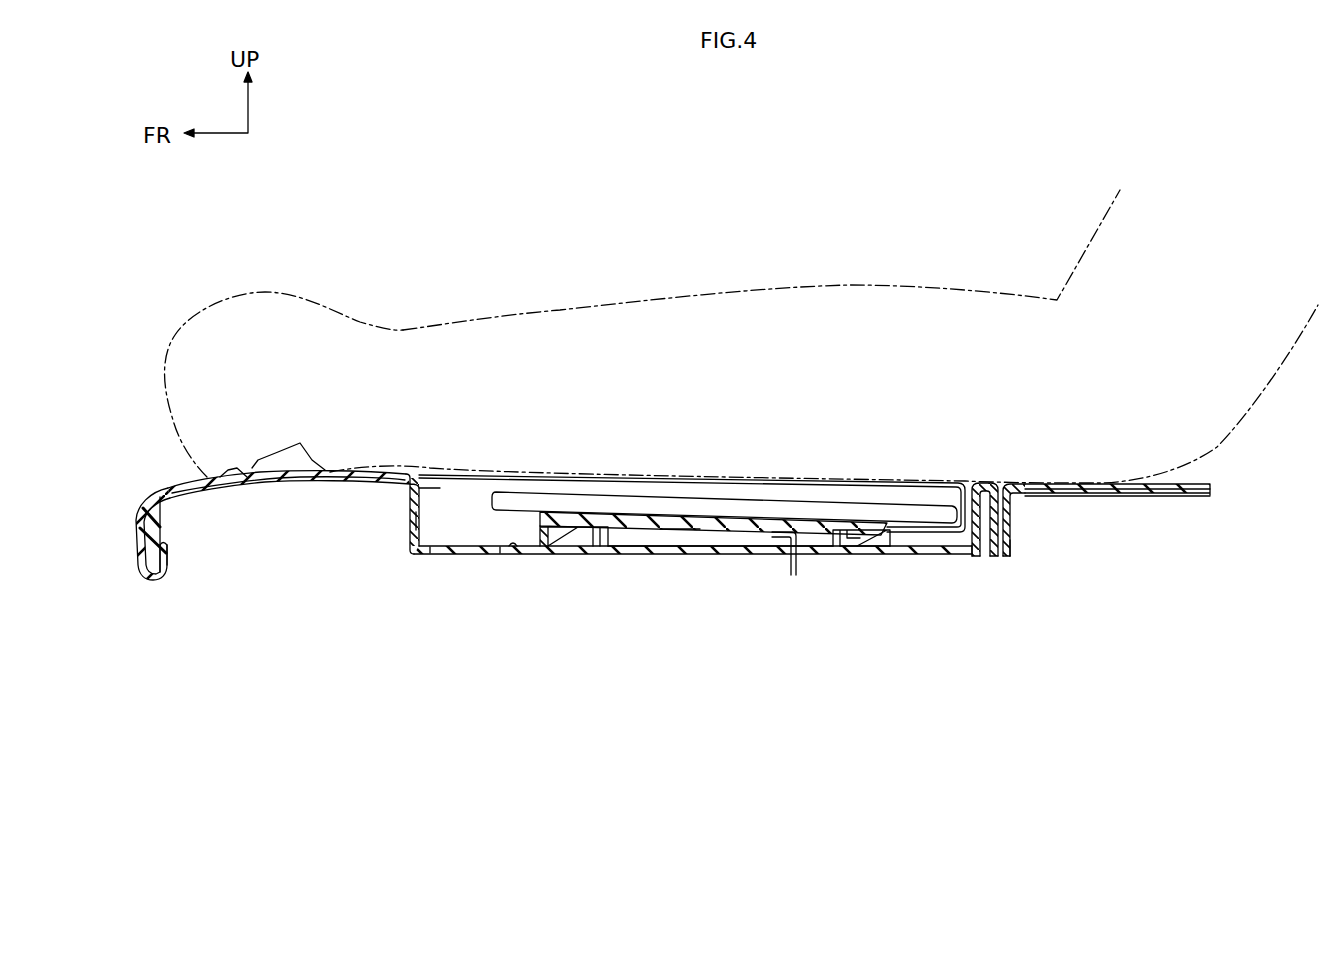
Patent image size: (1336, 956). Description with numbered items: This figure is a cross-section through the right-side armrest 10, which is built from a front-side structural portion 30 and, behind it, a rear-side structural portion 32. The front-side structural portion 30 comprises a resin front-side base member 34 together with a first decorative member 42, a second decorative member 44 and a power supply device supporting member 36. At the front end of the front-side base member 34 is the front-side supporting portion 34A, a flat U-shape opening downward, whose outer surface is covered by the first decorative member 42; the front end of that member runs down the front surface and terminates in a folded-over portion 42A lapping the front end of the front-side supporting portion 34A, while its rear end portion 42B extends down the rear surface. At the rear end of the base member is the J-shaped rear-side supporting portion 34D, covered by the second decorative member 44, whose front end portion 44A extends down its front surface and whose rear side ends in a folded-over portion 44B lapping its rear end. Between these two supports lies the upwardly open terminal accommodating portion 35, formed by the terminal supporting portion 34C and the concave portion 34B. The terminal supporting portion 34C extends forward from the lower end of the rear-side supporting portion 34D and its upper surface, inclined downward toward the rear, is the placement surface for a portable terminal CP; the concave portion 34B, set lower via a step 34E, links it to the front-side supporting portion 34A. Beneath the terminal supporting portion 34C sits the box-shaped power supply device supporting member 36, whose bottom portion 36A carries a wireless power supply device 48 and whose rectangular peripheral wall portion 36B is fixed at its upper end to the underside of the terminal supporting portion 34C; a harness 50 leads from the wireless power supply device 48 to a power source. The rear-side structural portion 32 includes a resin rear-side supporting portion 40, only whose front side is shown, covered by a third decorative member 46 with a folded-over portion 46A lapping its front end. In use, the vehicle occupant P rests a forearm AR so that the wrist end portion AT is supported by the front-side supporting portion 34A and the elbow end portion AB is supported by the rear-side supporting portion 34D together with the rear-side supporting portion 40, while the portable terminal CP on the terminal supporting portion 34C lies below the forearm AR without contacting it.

The right-side armrest 10 is at (412, 239).
The front-side structural portion 30 is at (628, 601).
The rear-side structural portion 32 is at (1132, 541).
The front-side base member 34 is at (455, 558).
The front-side supporting portion 34A is at (308, 489).
The concave portion 34B is at (512, 553).
The terminal supporting portion 34C is at (745, 514).
The rear-side supporting portion 34D is at (945, 494).
The step 34E is at (523, 553).
The terminal accommodating portion 35 is at (457, 494).
The power supply device supporting member 36 is at (876, 559).
The bottom portion 36A is at (687, 530).
The peripheral wall portion 36B is at (828, 554).
The rear-side supporting portion 40 is at (1187, 497).
The first decorative member 42 is at (165, 482).
The folded-over portion 42A is at (167, 547).
The rear end portion 42B is at (418, 512).
The second decorative member 44 is at (980, 483).
The front end portion 44A is at (970, 551).
The folded-over portion 44B is at (1000, 557).
The third decorative member 46 is at (1190, 484).
The folded-over portion 46A is at (1023, 553).
The wireless power supply device 48 is at (710, 549).
The harness 50 is at (785, 575).
The portable terminal CP is at (620, 491).
The vehicle occupant P is at (868, 256).
The wrist end portion AT is at (403, 328).
The forearm AR is at (990, 289).
The elbow end portion AB is at (1137, 487).